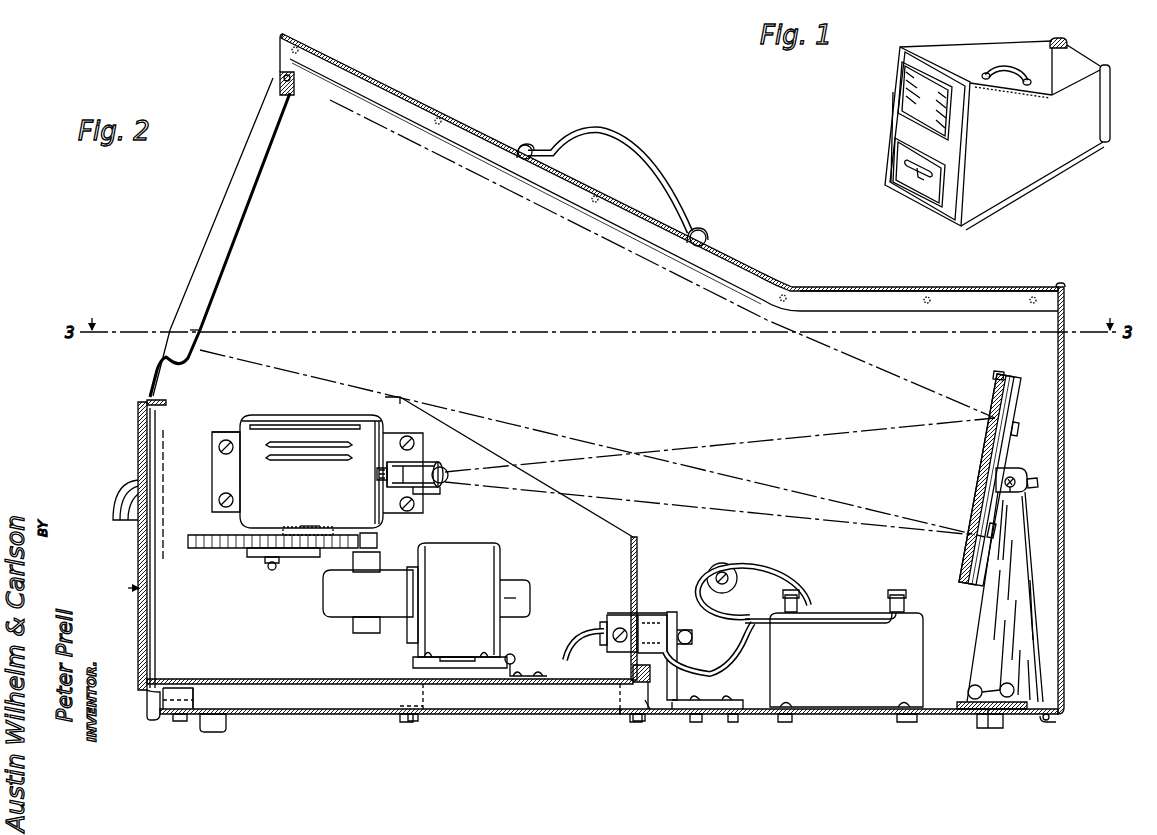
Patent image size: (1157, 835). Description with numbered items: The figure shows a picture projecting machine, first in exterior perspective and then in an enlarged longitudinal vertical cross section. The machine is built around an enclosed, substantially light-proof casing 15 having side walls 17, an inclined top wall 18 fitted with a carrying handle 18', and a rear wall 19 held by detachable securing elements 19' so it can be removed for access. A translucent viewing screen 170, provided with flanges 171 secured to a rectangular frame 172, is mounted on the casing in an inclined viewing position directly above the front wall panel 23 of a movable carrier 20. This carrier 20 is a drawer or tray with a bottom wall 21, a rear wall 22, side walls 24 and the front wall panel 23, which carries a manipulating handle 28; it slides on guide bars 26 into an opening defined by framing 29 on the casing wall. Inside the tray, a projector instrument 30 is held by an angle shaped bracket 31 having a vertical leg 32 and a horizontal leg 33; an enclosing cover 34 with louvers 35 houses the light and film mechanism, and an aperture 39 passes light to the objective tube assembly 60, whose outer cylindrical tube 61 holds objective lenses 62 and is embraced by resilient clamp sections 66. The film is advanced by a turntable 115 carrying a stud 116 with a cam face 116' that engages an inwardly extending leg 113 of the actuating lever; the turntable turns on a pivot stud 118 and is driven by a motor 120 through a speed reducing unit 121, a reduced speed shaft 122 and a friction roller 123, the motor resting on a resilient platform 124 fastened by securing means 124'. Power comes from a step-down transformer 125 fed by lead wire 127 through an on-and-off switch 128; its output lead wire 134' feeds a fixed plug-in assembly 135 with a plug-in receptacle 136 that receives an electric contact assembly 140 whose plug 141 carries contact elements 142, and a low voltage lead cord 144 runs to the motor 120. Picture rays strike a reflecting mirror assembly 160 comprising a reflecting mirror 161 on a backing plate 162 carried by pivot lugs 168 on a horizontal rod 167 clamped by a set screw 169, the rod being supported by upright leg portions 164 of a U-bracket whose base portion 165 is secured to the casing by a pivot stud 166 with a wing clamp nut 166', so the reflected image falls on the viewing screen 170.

In FIG. 1, the casing 15 is at (1045, 177).
In FIG. 2, the casing 15 is at (756, 268).
In FIG. 1, the side walls 17 is at (1070, 118).
In FIG. 2, the side walls 17 is at (490, 259).
In FIG. 1, the top wall 18 is at (1011, 61).
In FIG. 1, the carrying handle 18' is at (1003, 63).
In FIG. 2, the carrying handle 18' is at (612, 179).
In FIG. 1, the rear wall 19 is at (1098, 87).
In FIG. 2, the rear wall 19 is at (1080, 500).
In FIG. 1, the detachable securing elements 19' is at (1072, 29).
In FIG. 1, the movable carrier 20 is at (891, 156).
In FIG. 2, the bottom wall 21 is at (284, 680).
In FIG. 2, the rear wall 22 is at (640, 550).
In FIG. 1, the front wall panel 23 is at (902, 172).
In FIG. 2, the front wall panel 23 is at (138, 554).
In FIG. 2, the side walls 24 is at (218, 620).
In FIG. 2, the guide bar 26 is at (646, 712).
In FIG. 1, the manipulating handle 28 is at (916, 178).
In FIG. 2, the manipulating handle 28 is at (118, 505).
In FIG. 1, the framing 29 is at (896, 127).
In FIG. 2, the projector instrument 30 is at (313, 411).
In FIG. 2, the angle shaped bracket 31 is at (400, 400).
In FIG. 2, the vertical leg 32 is at (312, 409).
In FIG. 2, the horizontal leg 33 is at (266, 559).
In FIG. 2, the enclosing cover 34 is at (242, 477).
In FIG. 2, the louvers 35 is at (300, 462).
In FIG. 2, the aperture 39 is at (376, 473).
In FIG. 2, the objective tube assembly 60 is at (434, 460).
In FIG. 2, the outer cylindrical tube 61 is at (428, 485).
In FIG. 2, the objective lenses 62 is at (447, 468).
In FIG. 2, the clamp sections 66 is at (406, 441).
In FIG. 2, the inwardly extending leg 113 is at (284, 534).
In FIG. 2, the turntable 115 is at (214, 540).
In FIG. 2, the stud 116 is at (314, 519).
In FIG. 2, the cam face 116' is at (325, 508).
In FIG. 2, the pivot stud 118 is at (273, 570).
In FIG. 2, the motor 120 is at (484, 556).
In FIG. 2, the speed reducing unit 121 is at (350, 612).
In FIG. 2, the reduced speed shaft 122 is at (366, 564).
In FIG. 2, the friction roller 123 is at (378, 541).
In FIG. 2, the resilient platform 124 is at (460, 678).
In FIG. 2, the securing means 124' is at (539, 678).
In FIG. 2, the step-down transformer 125 is at (855, 664).
In FIG. 2, the lead wire 127 is at (732, 614).
In FIG. 2, the on-and-off switch 128 is at (726, 564).
In FIG. 2, the output lead wire 134' is at (714, 656).
In FIG. 2, the fixed plug-in assembly 135 is at (668, 610).
In FIG. 2, the plug-in receptacle 136 is at (668, 710).
In FIG. 2, the electric contact assembly 140 is at (617, 612).
In FIG. 2, the plug 141 is at (609, 627).
In FIG. 2, the contact elements 142 is at (650, 614).
In FIG. 2, the low voltage lead cord 144 is at (580, 644).
In FIG. 2, the reflecting mirror assembly 160 is at (982, 392).
In FIG. 2, the reflecting mirror 161 is at (986, 456).
In FIG. 2, the backing plate 162 is at (986, 498).
In FIG. 2, the upright leg portions 164 is at (1030, 603).
In FIG. 2, the base portion 165 is at (960, 703).
In FIG. 2, the pivot stud 166 is at (950, 726).
In FIG. 2, the wing clamp nut 166' is at (1033, 675).
In FIG. 2, the horizontal rod 167 is at (1013, 490).
In FIG. 2, the pivot lugs 168 is at (1022, 471).
In FIG. 2, the set screw 169 is at (1040, 482).
In FIG. 1, the viewing screen 170 is at (910, 95).
In FIG. 2, the viewing screen 170 is at (232, 224).
In FIG. 2, the flanges 171 is at (290, 78).
In FIG. 2, the rectangular frame 172 is at (279, 90).